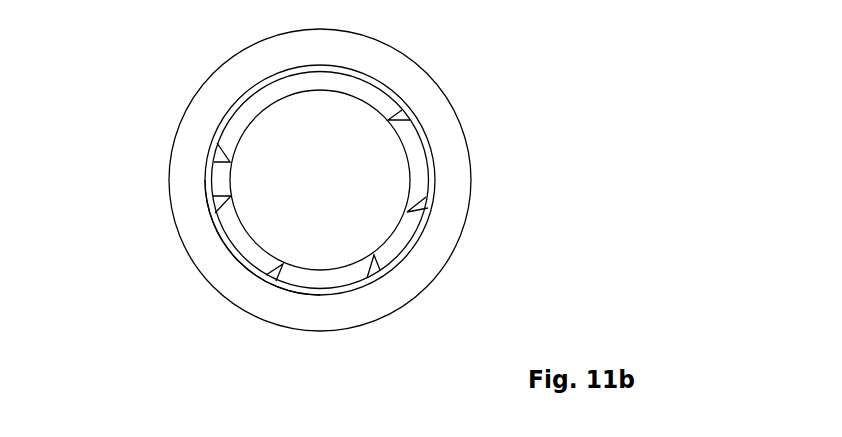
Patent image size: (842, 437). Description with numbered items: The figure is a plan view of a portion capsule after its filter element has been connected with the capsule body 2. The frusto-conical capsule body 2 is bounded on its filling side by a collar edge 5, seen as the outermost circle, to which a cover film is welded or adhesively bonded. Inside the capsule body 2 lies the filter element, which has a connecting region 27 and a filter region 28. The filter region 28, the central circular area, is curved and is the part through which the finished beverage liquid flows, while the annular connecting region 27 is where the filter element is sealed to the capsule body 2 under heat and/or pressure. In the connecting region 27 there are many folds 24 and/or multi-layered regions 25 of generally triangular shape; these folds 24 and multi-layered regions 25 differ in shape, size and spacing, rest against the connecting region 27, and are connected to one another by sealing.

The capsule body 2 is at (200, 186).
The collar edge 5 is at (463, 140).
The folds 24 is at (405, 209).
The multi-layered regions 25 is at (277, 279).
The connecting region 27 is at (240, 257).
The filter region 28 is at (268, 148).